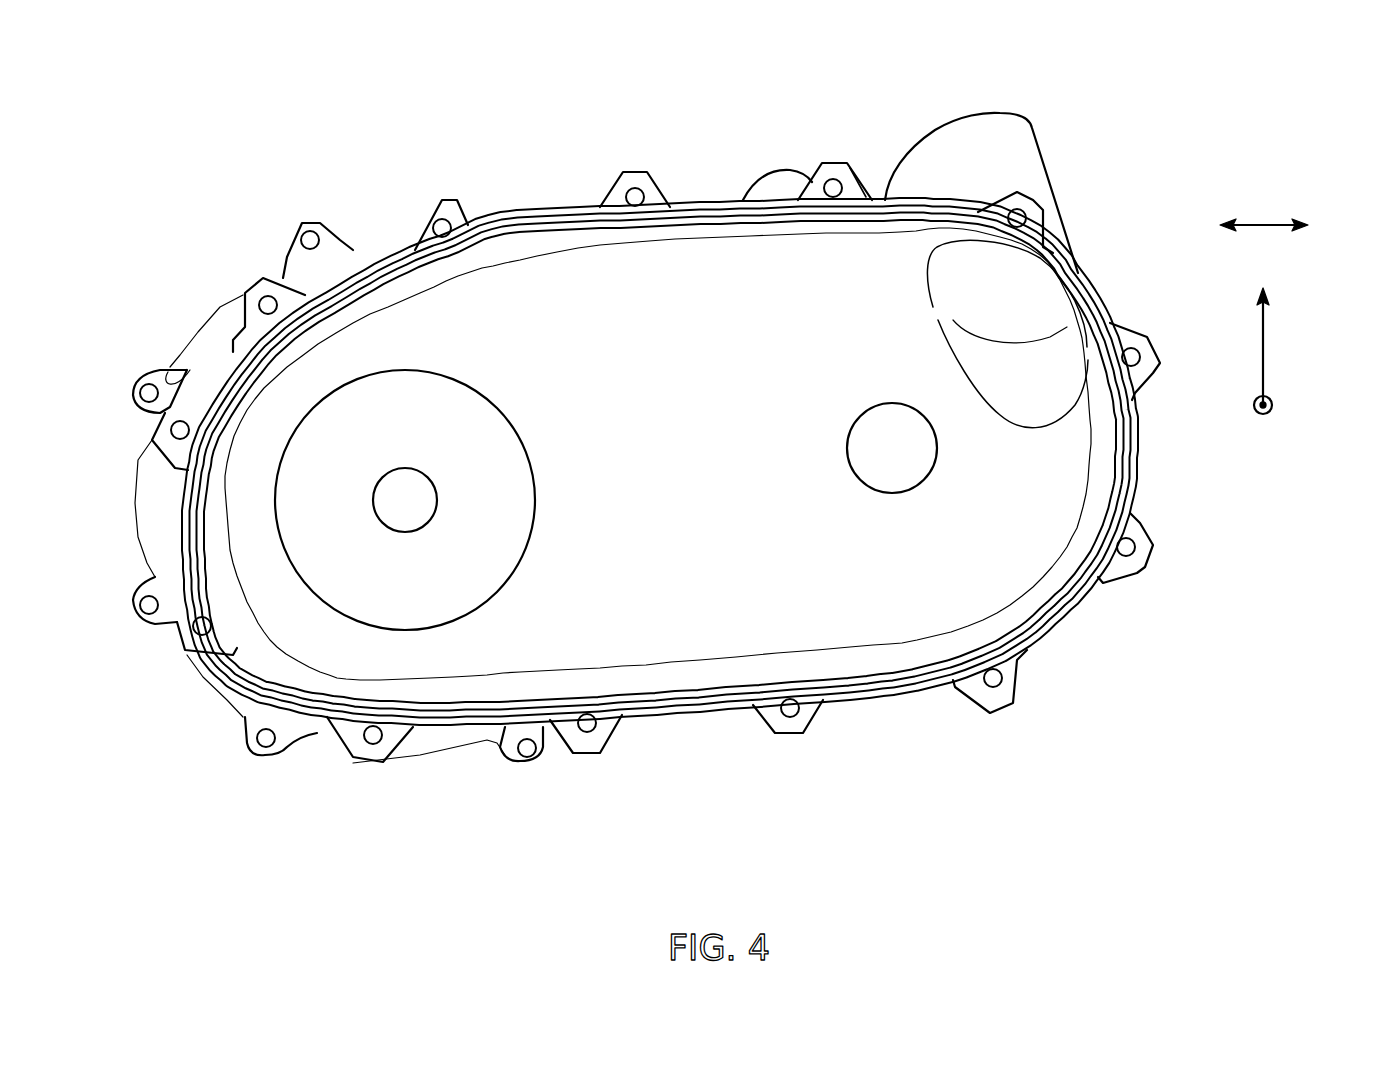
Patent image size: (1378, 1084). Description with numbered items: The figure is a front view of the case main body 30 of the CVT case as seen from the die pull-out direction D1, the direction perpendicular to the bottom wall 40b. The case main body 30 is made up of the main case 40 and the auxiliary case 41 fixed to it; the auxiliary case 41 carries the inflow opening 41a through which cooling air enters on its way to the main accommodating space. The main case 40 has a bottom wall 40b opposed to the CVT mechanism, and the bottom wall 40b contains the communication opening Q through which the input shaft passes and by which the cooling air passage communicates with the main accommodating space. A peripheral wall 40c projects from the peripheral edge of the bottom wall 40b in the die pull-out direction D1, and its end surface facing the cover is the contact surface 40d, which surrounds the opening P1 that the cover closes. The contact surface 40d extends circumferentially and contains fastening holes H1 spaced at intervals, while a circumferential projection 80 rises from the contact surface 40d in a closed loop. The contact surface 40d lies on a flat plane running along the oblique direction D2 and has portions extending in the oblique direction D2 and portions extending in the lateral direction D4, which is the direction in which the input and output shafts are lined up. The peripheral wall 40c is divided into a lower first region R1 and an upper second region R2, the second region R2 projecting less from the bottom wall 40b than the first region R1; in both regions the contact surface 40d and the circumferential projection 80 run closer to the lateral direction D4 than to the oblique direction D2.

The case main body 30 is at (136, 237).
The main case 40 is at (227, 352).
The auxiliary case 41 is at (230, 297).
The inflow opening 41a is at (975, 118).
The bottom wall 40b is at (875, 622).
The peripheral wall 40c is at (938, 645).
The contact surface 40d is at (463, 215).
The circumferential projection 80 is at (570, 218).
The fastening holes H1 is at (440, 220).
The communication opening Q is at (345, 602).
The opening P1 is at (648, 618).
The first region R1 is at (718, 705).
The second region R2 is at (687, 200).
The die pull-out direction D1 is at (1272, 405).
The oblique direction D2 is at (1265, 343).
The lateral direction D4 is at (1263, 225).